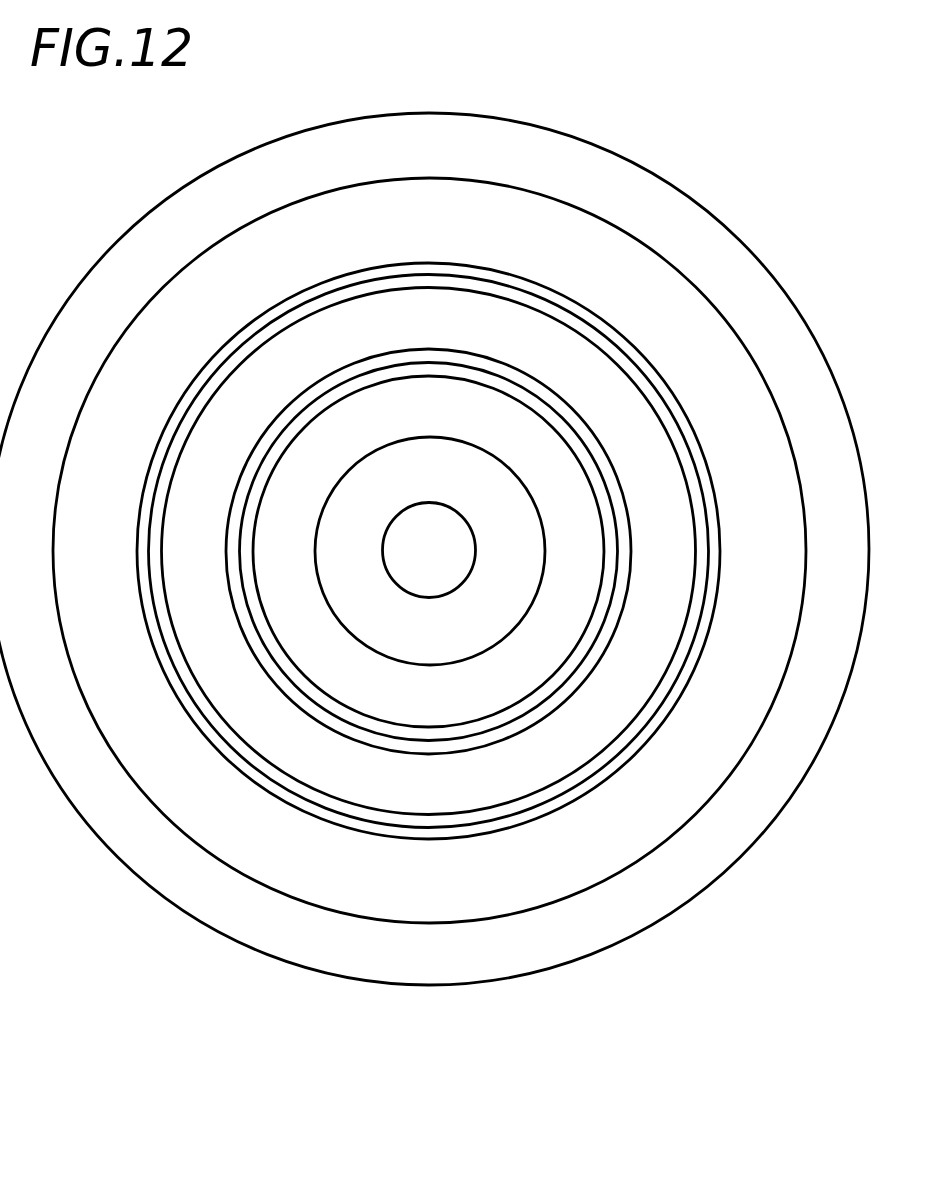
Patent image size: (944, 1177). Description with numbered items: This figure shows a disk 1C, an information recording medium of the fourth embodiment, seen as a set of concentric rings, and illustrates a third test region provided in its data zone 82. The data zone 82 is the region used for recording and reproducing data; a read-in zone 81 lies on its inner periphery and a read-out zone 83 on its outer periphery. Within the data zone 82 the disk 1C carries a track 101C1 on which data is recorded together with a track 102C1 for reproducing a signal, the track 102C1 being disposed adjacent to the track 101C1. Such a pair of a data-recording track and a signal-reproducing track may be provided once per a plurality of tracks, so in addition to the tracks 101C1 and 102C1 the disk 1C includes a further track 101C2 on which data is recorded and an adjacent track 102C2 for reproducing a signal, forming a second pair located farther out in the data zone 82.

The disk 1C is at (307, 90).
The read-in zone 81 is at (377, 618).
The data zone 82 is at (676, 300).
The read-out zone 83 is at (625, 174).
The track 101C1 is at (570, 670).
The track 102C1 is at (548, 707).
The track 101C2 is at (473, 817).
The track 102C2 is at (415, 835).